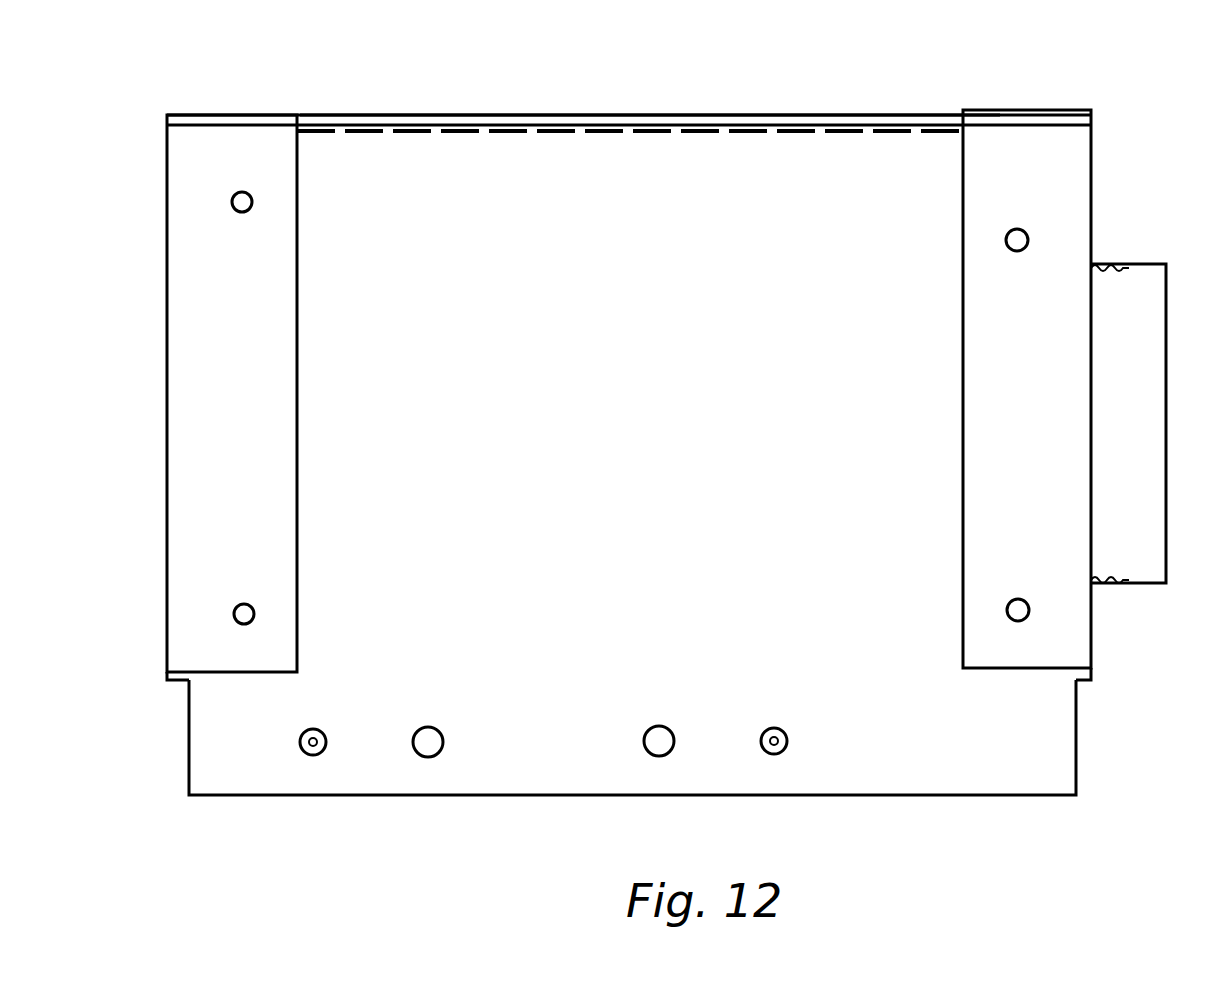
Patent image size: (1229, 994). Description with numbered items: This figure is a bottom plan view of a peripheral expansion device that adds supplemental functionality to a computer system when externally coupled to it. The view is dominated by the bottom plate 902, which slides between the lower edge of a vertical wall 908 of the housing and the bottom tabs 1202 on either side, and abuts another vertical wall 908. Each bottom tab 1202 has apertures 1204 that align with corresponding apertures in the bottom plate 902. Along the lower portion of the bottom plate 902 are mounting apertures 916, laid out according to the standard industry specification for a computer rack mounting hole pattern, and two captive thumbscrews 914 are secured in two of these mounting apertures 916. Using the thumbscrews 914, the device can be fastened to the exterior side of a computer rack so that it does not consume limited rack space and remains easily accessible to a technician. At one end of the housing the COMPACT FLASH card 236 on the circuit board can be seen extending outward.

The bottom plate 902 is at (629, 455).
The vertical wall 908 is at (1025, 112).
The bottom tabs 1202 is at (200, 483).
The apertures 1204 is at (241, 212).
The COMPACT FLASH card 236 is at (1137, 562).
The mounting apertures 916 is at (423, 723).
The captive thumbscrews 914 is at (310, 743).